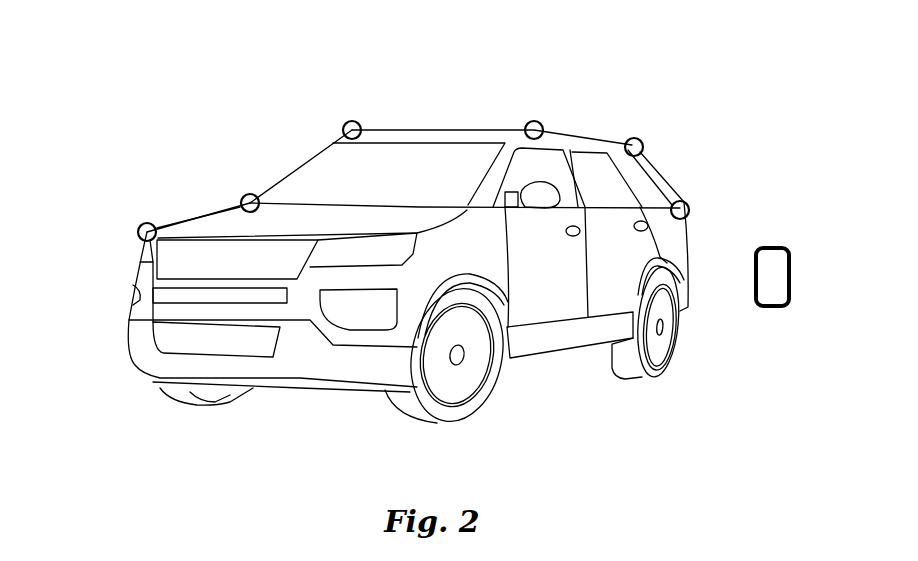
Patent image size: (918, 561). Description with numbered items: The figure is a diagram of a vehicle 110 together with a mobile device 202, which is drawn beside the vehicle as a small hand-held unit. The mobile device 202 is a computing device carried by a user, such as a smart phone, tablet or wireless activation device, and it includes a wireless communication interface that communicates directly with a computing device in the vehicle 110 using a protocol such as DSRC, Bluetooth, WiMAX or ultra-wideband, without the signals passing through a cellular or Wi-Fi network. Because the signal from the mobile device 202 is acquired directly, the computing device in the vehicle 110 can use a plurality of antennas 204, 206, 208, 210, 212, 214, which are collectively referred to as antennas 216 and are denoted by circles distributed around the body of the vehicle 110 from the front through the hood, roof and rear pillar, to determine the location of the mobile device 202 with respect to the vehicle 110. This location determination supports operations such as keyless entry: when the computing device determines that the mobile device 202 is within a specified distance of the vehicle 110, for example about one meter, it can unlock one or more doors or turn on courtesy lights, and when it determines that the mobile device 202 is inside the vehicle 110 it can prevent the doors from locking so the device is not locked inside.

The vehicle 110 is at (128, 320).
The mobile device 202 is at (790, 278).
The antenna 204 is at (140, 226).
The antenna 206 is at (243, 197).
The antenna 208 is at (360, 124).
The antenna 210 is at (542, 125).
The antenna 212 is at (642, 141).
The antenna 214 is at (689, 207).
The antennas 216 is at (140, 93).